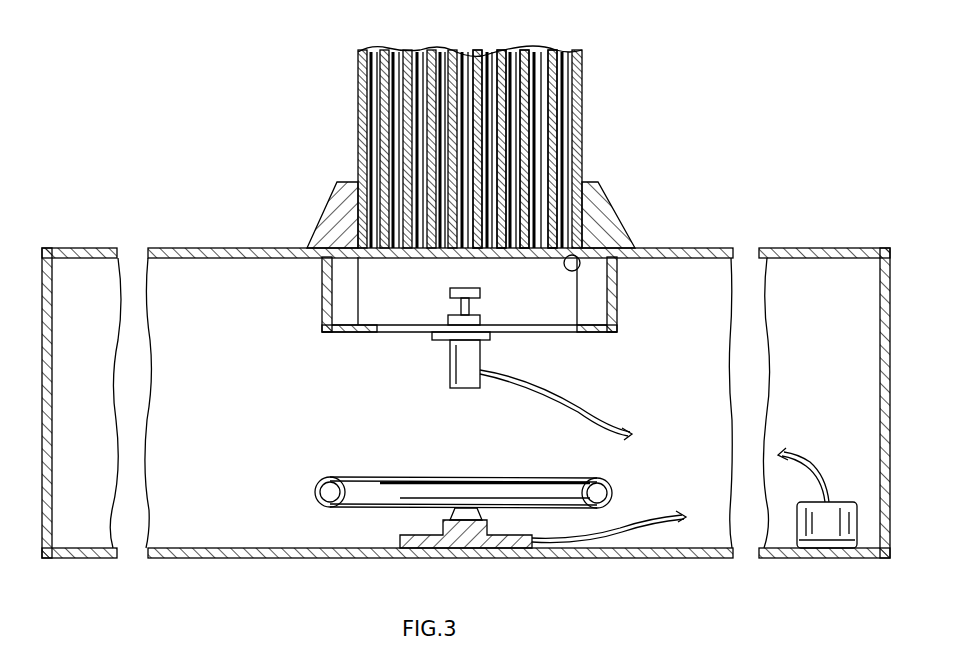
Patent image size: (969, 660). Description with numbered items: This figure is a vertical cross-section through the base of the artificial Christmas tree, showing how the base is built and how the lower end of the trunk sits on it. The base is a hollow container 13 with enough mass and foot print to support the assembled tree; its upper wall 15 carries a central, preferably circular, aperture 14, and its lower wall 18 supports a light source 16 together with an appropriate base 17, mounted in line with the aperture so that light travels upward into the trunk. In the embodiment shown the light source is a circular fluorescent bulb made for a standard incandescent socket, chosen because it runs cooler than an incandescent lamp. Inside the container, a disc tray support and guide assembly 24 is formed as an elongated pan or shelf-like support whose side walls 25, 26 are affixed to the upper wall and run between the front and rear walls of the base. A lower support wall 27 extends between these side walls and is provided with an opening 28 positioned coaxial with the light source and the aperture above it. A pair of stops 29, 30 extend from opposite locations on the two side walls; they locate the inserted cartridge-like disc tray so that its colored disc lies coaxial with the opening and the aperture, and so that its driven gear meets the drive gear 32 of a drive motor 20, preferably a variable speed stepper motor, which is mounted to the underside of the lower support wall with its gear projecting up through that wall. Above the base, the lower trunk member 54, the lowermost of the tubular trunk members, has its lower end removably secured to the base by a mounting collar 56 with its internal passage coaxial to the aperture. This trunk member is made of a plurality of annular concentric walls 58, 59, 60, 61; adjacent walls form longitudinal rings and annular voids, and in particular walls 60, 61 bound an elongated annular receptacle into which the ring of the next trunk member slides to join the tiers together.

The container 13 is at (888, 247).
The aperture 14 is at (583, 252).
The upper wall 15 is at (704, 248).
The light source 16 is at (318, 482).
The base of light source 17 is at (400, 538).
The lower wall 18 is at (217, 558).
The drive motor 20 is at (520, 367).
The disc tray support and guide assembly 24 is at (445, 303).
The side wall 25 is at (322, 278).
The side wall 26 is at (618, 282).
The lower support wall 27 is at (339, 332).
The opening 28 is at (372, 332).
The stop 29 is at (337, 297).
The stop 30 is at (604, 302).
The drive gear 32 is at (481, 293).
The lower trunk member 54 is at (584, 117).
The mounting collar 56 is at (600, 204).
The annular concentric wall 58 is at (554, 50).
The annular concentric wall 59 is at (528, 48).
The annular concentric wall 60 is at (502, 56).
The annular concentric wall 61 is at (480, 56).